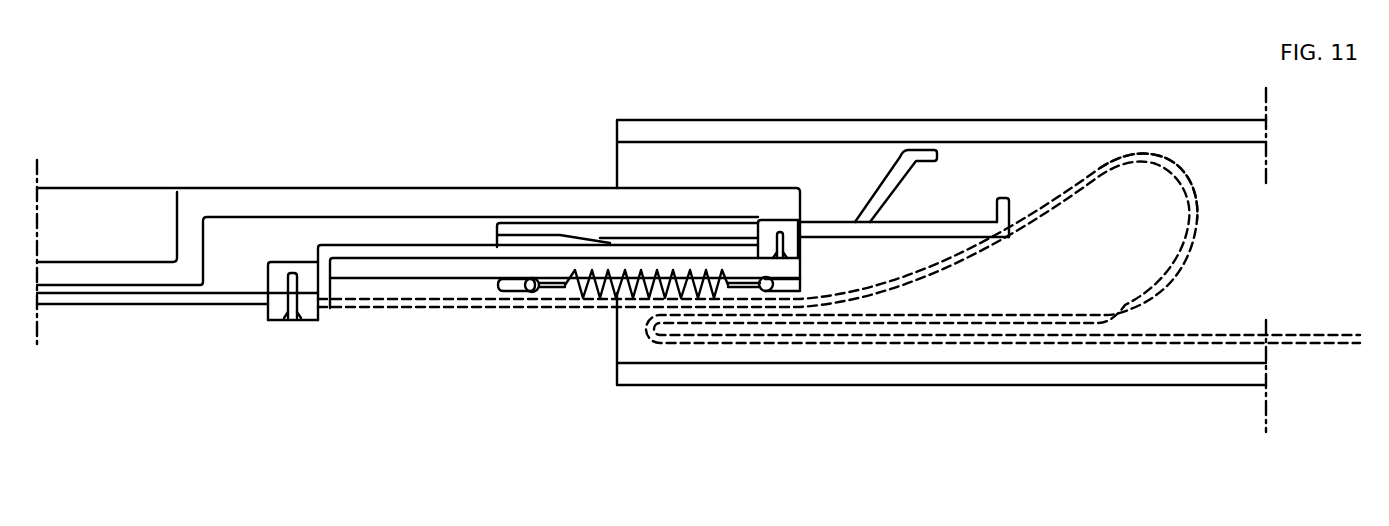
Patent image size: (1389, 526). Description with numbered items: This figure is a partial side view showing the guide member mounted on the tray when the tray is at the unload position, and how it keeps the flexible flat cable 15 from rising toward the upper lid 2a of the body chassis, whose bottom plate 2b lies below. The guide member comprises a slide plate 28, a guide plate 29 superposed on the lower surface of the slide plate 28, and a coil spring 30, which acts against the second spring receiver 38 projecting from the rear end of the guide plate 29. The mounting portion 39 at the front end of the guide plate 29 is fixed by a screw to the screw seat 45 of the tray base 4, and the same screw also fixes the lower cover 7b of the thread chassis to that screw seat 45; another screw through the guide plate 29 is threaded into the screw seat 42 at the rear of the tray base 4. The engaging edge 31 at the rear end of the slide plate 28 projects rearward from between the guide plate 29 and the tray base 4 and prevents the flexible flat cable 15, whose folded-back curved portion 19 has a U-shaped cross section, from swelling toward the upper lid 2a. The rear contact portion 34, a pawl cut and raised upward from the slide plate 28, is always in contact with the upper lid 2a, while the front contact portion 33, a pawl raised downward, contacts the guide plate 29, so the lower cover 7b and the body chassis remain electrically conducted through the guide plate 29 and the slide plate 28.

The tray base 4 is at (287, 187).
The lower cover 7b is at (95, 303).
The guide plate 29 is at (413, 253).
The screw seat 45 is at (273, 272).
The mounting portion 39 is at (327, 323).
The front contact portion 33 is at (590, 243).
The screw seat 42 is at (783, 238).
The coil spring 30 is at (565, 297).
The second spring receiver 38 is at (777, 300).
The upper lid 2a is at (1107, 130).
The bottom plate 2b is at (1112, 373).
The slide plate 28 is at (962, 232).
The engaging edge 31 is at (1006, 200).
The rear contact portion 34 is at (893, 172).
The flexible flat cable 15 is at (1197, 203).
The folded-back curved portion 19 is at (1158, 163).